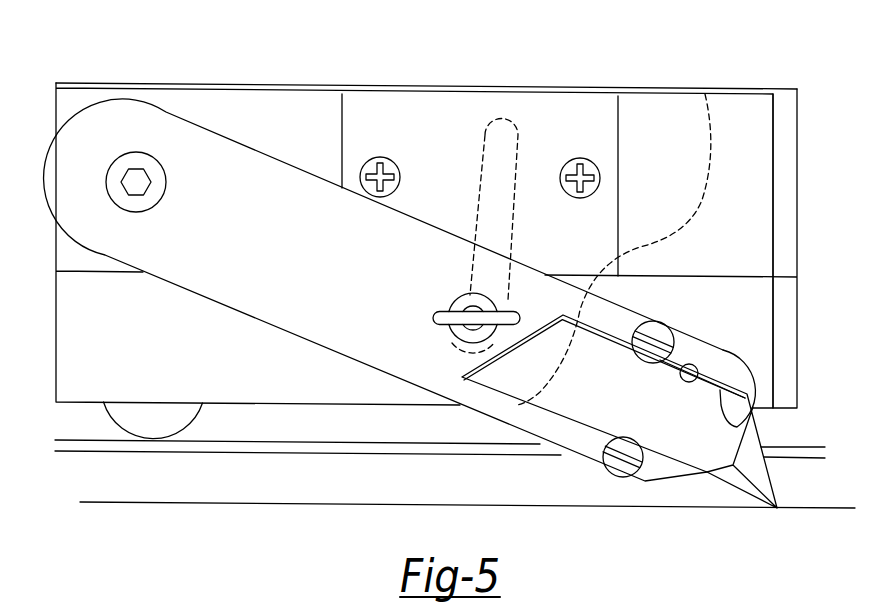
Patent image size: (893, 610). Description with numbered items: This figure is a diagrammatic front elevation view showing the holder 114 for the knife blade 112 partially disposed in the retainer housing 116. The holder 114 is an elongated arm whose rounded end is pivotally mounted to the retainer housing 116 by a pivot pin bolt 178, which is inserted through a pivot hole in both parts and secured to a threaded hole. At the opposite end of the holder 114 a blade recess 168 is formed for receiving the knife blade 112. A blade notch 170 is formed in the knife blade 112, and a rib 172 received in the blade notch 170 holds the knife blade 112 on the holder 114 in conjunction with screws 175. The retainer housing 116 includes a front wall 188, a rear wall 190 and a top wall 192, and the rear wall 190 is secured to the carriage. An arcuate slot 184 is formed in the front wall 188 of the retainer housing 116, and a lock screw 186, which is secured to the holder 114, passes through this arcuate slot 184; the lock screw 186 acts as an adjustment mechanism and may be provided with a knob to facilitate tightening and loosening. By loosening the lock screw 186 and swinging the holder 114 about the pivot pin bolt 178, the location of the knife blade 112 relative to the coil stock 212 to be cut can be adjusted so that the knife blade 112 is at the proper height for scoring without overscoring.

The knife blade 112 is at (758, 480).
The holder 114 is at (588, 446).
The retainer housing 116 is at (430, 100).
The blade recess 168 is at (748, 428).
The blade notch 170 is at (683, 381).
The rib 172 is at (692, 366).
The screws 175 is at (647, 333).
The pivot pin bolt 178 is at (150, 193).
The arcuate slot 184 is at (510, 155).
The lock screw 186 is at (433, 318).
The front wall 188 is at (222, 108).
The rear wall 190 is at (745, 207).
The top wall 192 is at (583, 85).
The coil stock 212 is at (252, 502).